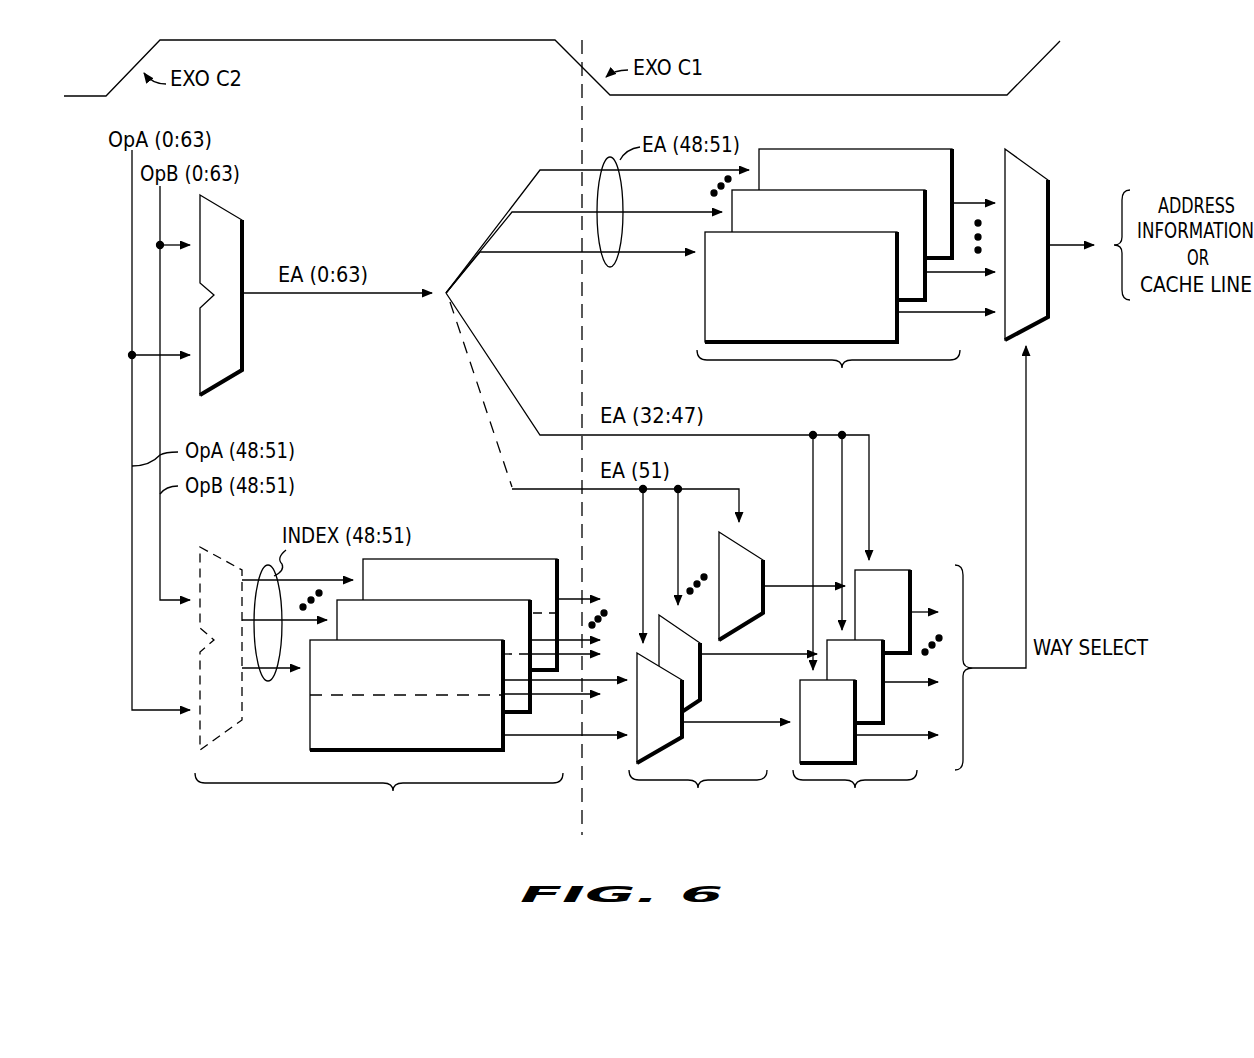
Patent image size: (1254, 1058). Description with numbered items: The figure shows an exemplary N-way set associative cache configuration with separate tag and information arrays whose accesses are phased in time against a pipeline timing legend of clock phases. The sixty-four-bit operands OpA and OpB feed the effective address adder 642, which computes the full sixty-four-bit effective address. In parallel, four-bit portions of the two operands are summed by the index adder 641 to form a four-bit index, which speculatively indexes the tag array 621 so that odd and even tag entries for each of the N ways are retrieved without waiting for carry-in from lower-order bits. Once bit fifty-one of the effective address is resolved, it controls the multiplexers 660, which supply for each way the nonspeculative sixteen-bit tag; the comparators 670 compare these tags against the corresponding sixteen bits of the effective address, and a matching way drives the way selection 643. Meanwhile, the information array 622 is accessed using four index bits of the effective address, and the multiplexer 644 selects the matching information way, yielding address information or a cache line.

The tag array 621 is at (379, 702).
The information array 622 is at (828, 284).
The index adder 641 is at (228, 568).
The effective address adder 642 is at (220, 395).
The way selection 643 is at (1027, 503).
The multiplexer 644 is at (1018, 160).
The multiplexers 660 is at (698, 688).
The comparators 670 is at (867, 707).